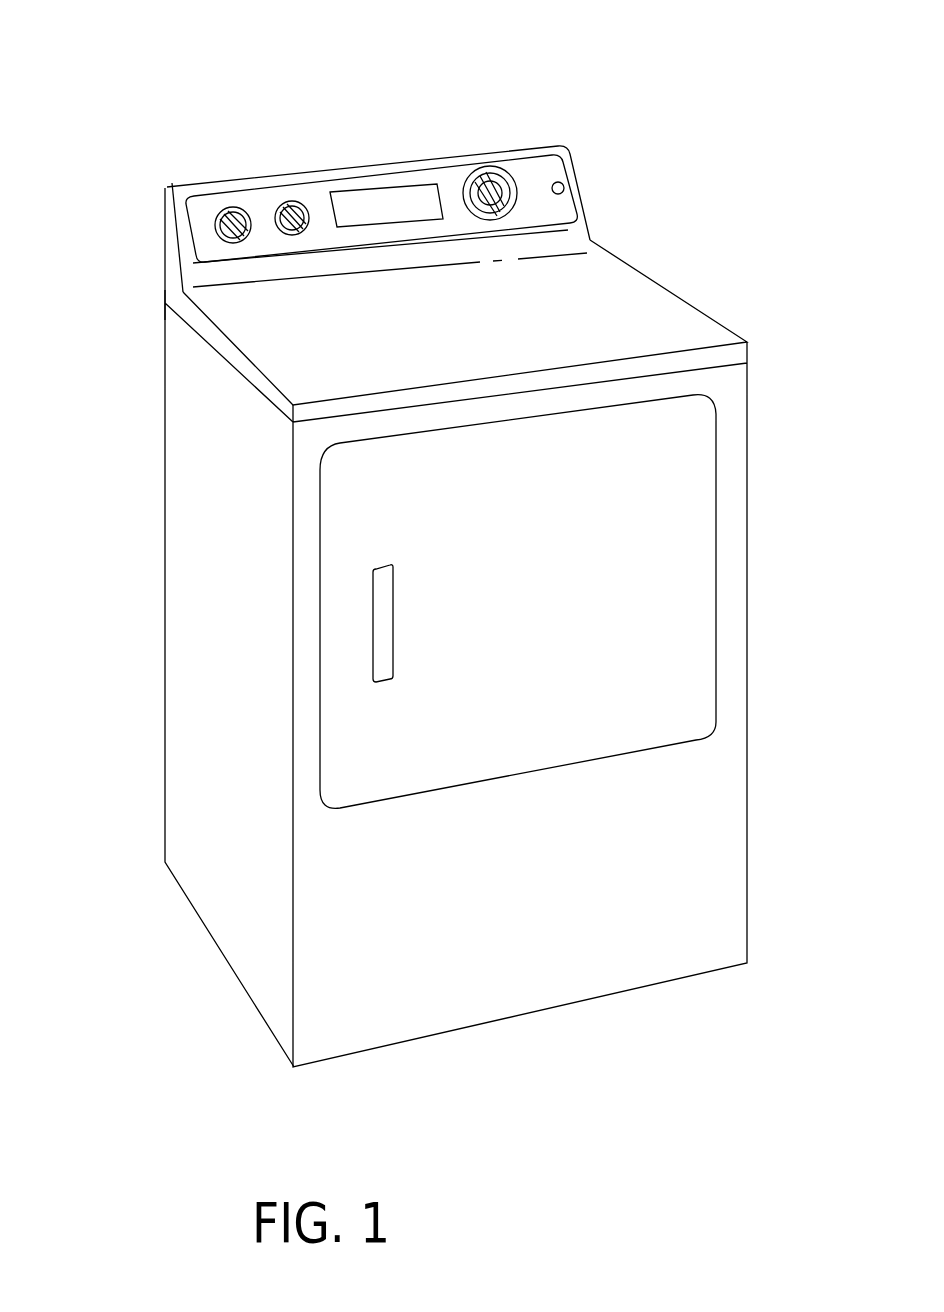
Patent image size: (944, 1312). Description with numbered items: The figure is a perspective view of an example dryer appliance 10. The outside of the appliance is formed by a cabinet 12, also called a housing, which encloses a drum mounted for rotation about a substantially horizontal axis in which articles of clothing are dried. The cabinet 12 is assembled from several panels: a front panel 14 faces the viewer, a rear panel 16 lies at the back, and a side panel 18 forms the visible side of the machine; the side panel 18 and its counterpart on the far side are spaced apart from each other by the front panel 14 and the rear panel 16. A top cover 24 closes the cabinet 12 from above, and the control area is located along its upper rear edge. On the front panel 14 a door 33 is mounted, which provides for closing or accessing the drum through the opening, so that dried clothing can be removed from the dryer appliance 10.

The dryer appliance 10 is at (457, 534).
The cabinet 12 is at (455, 606).
The front panel 14 is at (595, 947).
The rear panel 16 is at (163, 388).
The side panel 18 is at (200, 583).
The top cover 24 is at (615, 318).
The door 33 is at (667, 570).